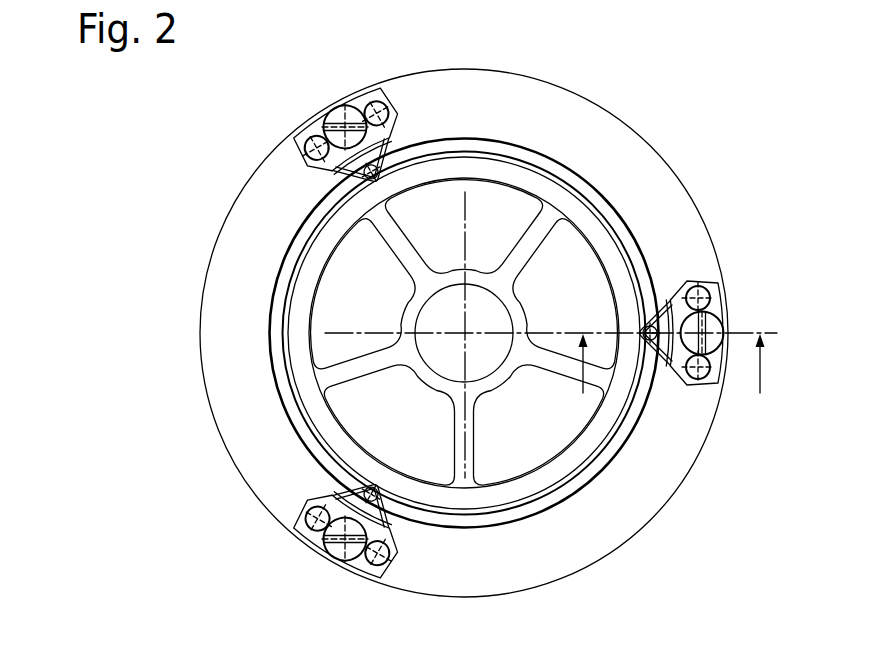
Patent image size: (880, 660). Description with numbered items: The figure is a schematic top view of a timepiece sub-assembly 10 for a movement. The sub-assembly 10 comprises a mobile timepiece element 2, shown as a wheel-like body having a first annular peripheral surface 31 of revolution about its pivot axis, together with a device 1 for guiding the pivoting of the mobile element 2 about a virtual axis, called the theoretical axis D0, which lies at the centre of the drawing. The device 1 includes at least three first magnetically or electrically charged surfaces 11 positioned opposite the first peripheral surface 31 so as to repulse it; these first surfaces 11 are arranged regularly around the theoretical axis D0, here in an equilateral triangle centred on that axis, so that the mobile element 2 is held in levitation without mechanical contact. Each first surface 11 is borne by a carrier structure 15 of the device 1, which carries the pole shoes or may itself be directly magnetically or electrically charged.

The timepiece sub-assembly 10 is at (737, 118).
The device for guiding pivoting 1 is at (693, 252).
The mobile timepiece element 2 is at (494, 312).
The first annular peripheral surface 31 is at (593, 213).
The theoretical axis D0 is at (470, 328).
The first magnetically or electrically charged surface 11 is at (665, 368).
The carrier structure 15 is at (523, 345).